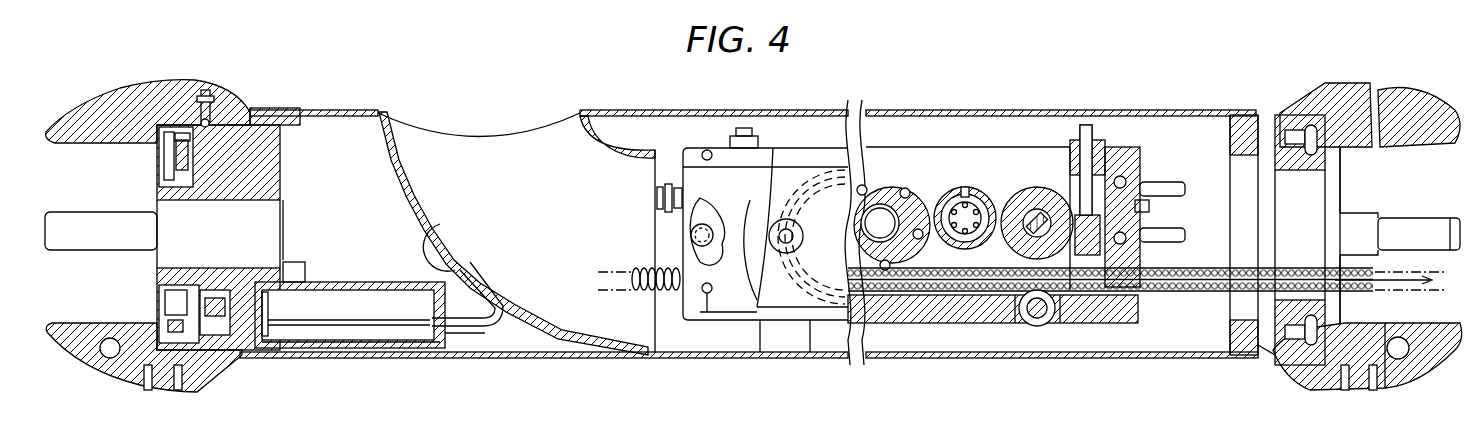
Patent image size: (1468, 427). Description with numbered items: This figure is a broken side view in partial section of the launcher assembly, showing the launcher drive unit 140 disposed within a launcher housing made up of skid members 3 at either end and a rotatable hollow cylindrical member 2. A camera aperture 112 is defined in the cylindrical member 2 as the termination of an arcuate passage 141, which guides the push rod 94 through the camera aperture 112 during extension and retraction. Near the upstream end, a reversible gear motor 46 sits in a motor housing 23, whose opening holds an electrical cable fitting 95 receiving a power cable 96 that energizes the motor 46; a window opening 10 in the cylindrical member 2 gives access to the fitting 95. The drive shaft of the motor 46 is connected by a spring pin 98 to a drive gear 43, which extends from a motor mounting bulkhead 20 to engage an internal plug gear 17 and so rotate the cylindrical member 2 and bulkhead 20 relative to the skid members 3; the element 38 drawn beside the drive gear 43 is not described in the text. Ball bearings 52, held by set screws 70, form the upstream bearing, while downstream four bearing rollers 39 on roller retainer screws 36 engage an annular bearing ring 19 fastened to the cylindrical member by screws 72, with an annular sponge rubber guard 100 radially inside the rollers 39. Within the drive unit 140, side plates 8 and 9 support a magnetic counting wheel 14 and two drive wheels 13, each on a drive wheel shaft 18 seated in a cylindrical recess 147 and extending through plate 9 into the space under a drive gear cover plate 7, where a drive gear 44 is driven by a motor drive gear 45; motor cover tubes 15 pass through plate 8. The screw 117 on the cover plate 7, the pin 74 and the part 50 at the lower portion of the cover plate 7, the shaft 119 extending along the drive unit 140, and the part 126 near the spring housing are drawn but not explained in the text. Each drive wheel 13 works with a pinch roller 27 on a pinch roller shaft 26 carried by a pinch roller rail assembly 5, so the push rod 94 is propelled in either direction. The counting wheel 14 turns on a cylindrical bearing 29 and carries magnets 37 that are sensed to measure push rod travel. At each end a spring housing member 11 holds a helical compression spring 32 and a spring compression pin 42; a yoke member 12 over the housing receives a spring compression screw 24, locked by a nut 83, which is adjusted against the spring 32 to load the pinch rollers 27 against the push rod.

The rotatable hollow cylindrical member 2 is at (402, 360).
The skid members 3 is at (87, 100).
The pinch roller rail assembly 5 is at (1080, 322).
The drive gear cover plate 7 is at (690, 322).
The side plate 8 is at (995, 147).
The side plate 9 is at (770, 322).
The window opening 10 is at (430, 249).
The spring housing member 11 is at (1125, 147).
The yoke member 12 is at (1108, 148).
The drive wheels 13 is at (1022, 197).
The magnetic counting wheel 14 is at (897, 187).
The motor cover tubes 15 is at (965, 188).
The internal plug gear 17 is at (185, 175).
The drive wheel shaft 18 is at (766, 264).
The annular bearing ring 19 is at (1235, 326).
The motor mounting bulkhead 20 is at (156, 192).
The motor housing 23 is at (368, 360).
The spring compression screw 24 is at (1086, 124).
The pinch roller shaft 26 is at (1033, 322).
The pinch roller 27 is at (1045, 322).
The cylindrical bearing 29 is at (905, 200).
The helical compression spring 32 is at (1098, 300).
The roller retainer screws 36 is at (1316, 350).
The magnets 37 is at (885, 262).
The seal 38 is at (215, 292).
The bearing rollers 39 is at (1305, 355).
The spring compression pin 42 is at (1142, 216).
The drive gear 43 is at (160, 302).
The drive gear 44 is at (810, 185).
The motor drive gear 45 is at (848, 118).
The reversible gear motor 46 is at (360, 313).
The cam housing 50 is at (812, 330).
The ball bearings 52 is at (203, 120).
The set screws 70 is at (206, 90).
The screws 72 is at (1262, 358).
The pin 74 is at (707, 312).
The nut 83 is at (1070, 142).
The push rod 94 is at (640, 266).
The electrical cable fitting 95 is at (455, 335).
The power cable 96 is at (500, 328).
The spring pin 98 is at (258, 303).
The annular sponge rubber guard 100 is at (1355, 170).
The camera aperture 112 is at (538, 124).
The adjusting screw 117 is at (657, 196).
The ball screw shaft 119 is at (1195, 180).
The pin 126 is at (1185, 265).
The launcher drive unit 140 is at (975, 328).
The arcuate passage 141 is at (560, 322).
The cylindrical recess 147 is at (1140, 172).